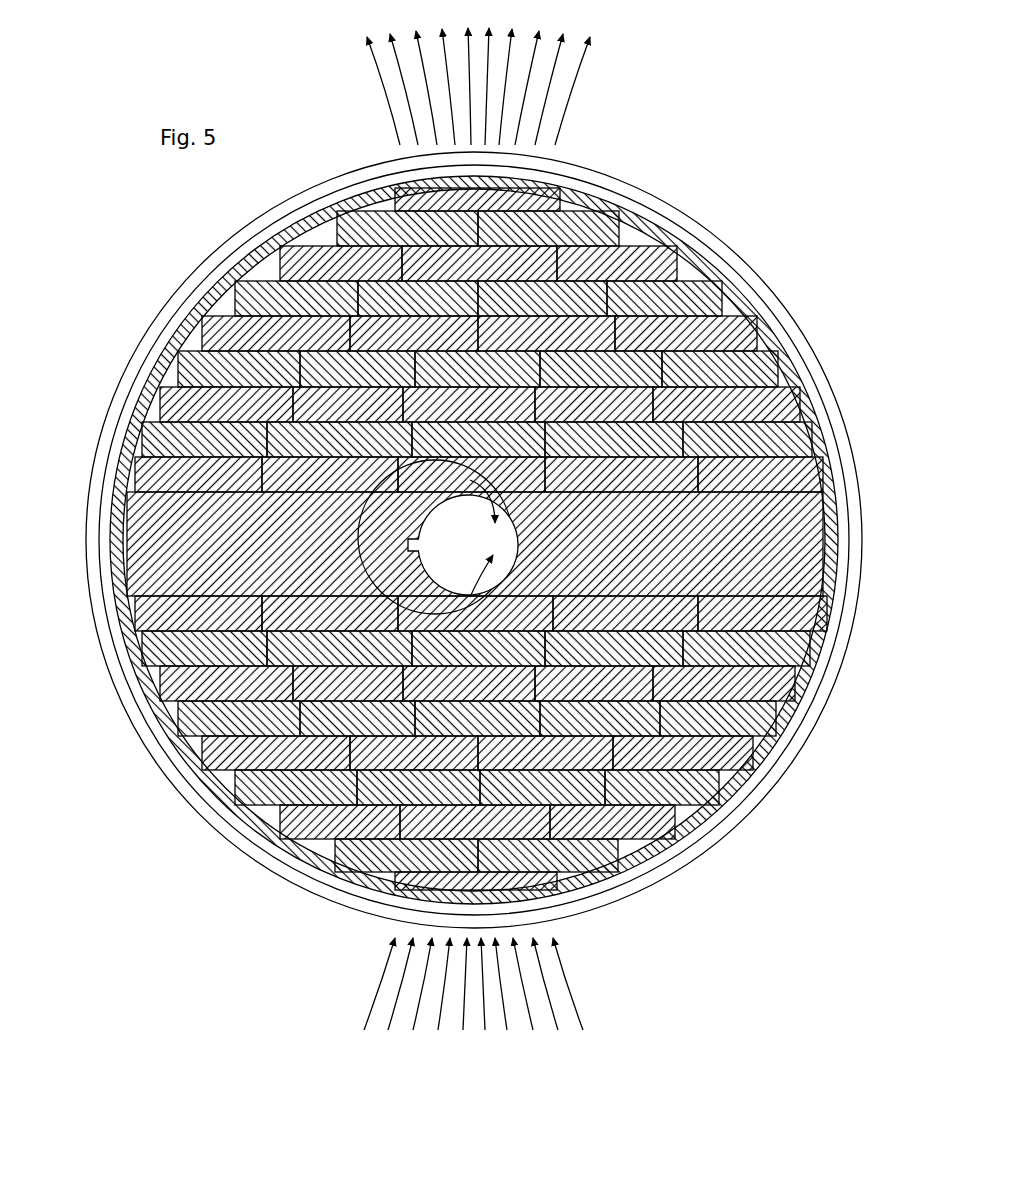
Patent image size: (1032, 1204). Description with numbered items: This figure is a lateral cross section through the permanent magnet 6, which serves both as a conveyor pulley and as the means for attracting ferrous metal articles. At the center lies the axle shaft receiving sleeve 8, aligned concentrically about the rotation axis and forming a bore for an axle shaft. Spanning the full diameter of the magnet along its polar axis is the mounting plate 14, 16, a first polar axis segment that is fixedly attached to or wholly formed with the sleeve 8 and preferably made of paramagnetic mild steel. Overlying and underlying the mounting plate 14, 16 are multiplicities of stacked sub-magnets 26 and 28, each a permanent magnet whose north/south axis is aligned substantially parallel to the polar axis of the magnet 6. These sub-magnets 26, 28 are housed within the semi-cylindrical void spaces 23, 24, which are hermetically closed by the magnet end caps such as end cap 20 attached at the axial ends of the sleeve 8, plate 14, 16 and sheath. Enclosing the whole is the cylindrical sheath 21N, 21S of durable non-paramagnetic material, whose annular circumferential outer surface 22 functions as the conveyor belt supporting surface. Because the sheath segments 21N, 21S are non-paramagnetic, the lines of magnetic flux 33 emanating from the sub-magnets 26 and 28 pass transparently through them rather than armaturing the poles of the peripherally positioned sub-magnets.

The permanent magnet 6 is at (485, 538).
The axle shaft receiving sleeve 8 is at (482, 600).
The mounting plate 14 is at (215, 540).
The mounting plate 16 is at (712, 568).
The magnet end cap 20 is at (735, 248).
The cylindrical sheath segment 21N is at (648, 215).
The cylindrical sheath segment 21S is at (252, 822).
The circumferential outer surface 22 is at (248, 249).
The semi-cylindrical void space 23 is at (322, 232).
The semi-cylindrical void space 24 is at (686, 818).
The stacked sub-magnets 26 is at (375, 225).
The stacked sub-magnets 28 is at (195, 692).
The lines of magnetic flux 33 is at (543, 115).